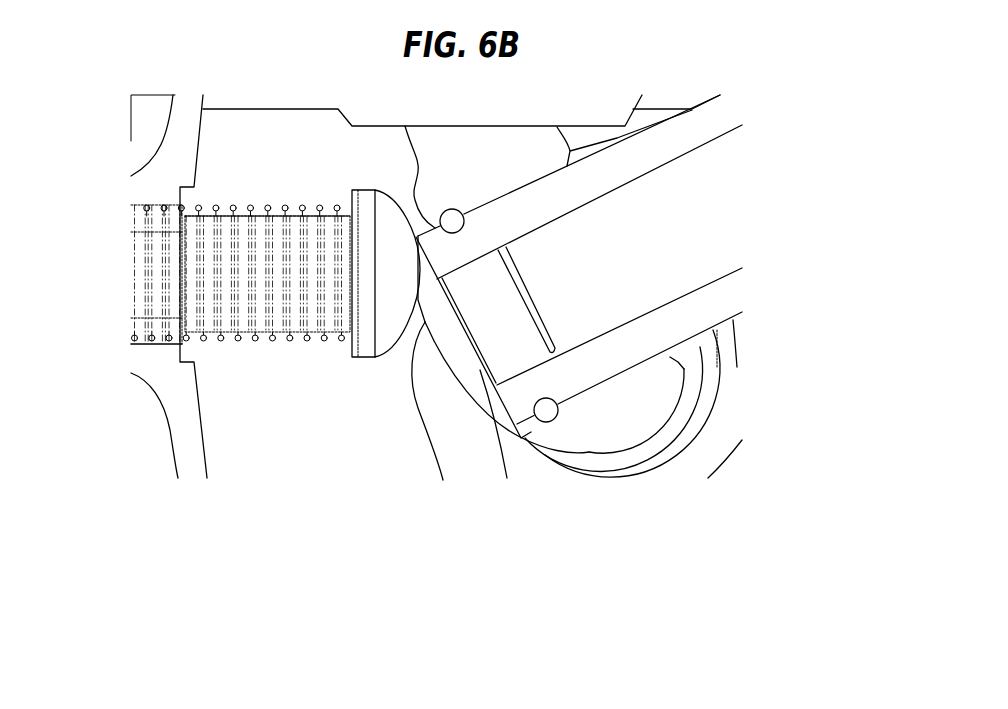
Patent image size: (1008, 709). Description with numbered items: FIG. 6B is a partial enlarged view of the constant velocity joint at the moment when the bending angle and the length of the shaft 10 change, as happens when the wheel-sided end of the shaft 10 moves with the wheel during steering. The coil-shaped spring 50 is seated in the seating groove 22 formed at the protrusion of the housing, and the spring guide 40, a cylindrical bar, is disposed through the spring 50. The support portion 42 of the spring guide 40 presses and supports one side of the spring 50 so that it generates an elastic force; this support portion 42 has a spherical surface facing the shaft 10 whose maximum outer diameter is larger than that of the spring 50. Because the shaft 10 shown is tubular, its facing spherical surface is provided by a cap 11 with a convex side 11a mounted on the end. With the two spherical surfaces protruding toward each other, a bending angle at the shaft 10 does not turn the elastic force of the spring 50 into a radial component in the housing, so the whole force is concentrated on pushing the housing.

The shaft 10 is at (673, 325).
The cap 11 is at (490, 337).
The convex side 11a is at (452, 336).
The seating groove 22 is at (143, 346).
The spring guide 40 is at (250, 325).
The support portion 42 is at (393, 327).
The spring 50 is at (147, 206).